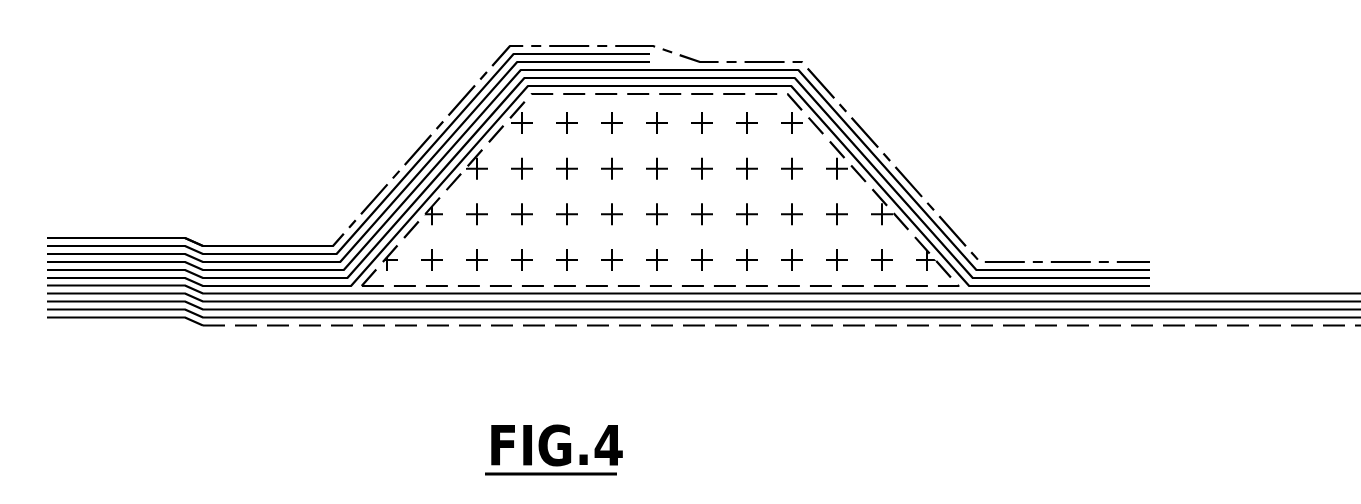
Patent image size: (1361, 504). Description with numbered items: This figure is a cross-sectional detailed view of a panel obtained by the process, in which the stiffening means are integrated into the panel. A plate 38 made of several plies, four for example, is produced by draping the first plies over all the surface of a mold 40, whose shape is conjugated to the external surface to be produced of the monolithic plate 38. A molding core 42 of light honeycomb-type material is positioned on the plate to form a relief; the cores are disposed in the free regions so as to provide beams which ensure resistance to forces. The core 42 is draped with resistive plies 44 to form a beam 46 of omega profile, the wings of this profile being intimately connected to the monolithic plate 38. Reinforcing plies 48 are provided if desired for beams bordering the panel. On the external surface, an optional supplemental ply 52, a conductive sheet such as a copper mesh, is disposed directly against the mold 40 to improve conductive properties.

The plate 38 is at (1025, 330).
The mold 40 is at (927, 390).
The molding core 42 is at (803, 148).
The resistive plies 44 is at (947, 225).
The beam 46 is at (923, 143).
The reinforcing plies 48 is at (408, 192).
The supplemental ply 52 is at (1183, 327).